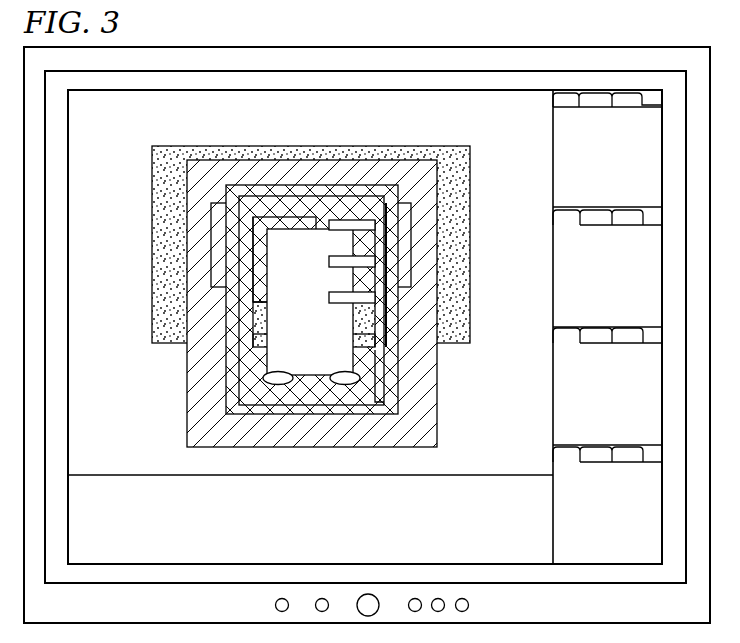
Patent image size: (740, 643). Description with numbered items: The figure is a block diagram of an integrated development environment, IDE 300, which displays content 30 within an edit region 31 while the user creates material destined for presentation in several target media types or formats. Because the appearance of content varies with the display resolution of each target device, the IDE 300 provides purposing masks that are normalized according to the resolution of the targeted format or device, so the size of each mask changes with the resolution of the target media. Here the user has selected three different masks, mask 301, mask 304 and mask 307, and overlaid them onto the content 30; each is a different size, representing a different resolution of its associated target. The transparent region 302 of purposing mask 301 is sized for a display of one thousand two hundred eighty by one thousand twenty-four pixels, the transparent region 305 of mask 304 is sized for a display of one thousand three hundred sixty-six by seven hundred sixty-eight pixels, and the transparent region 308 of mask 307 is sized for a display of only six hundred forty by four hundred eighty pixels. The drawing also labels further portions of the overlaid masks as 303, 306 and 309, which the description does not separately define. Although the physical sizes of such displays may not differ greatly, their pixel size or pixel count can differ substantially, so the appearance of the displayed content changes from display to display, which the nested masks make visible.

The IDE 300 is at (425, 90).
The edit region 31 is at (115, 121).
The content 30 is at (377, 257).
The purposing mask 301 is at (187, 403).
The transparent region 302 is at (232, 360).
The hatched region of first layer 303 is at (213, 420).
The mask 304 is at (147, 215).
The transparent region 305 is at (210, 240).
The stippled region 306 is at (180, 266).
The mask 307 is at (400, 387).
The transparent region 308 is at (372, 348).
The side strip 309 is at (385, 364).